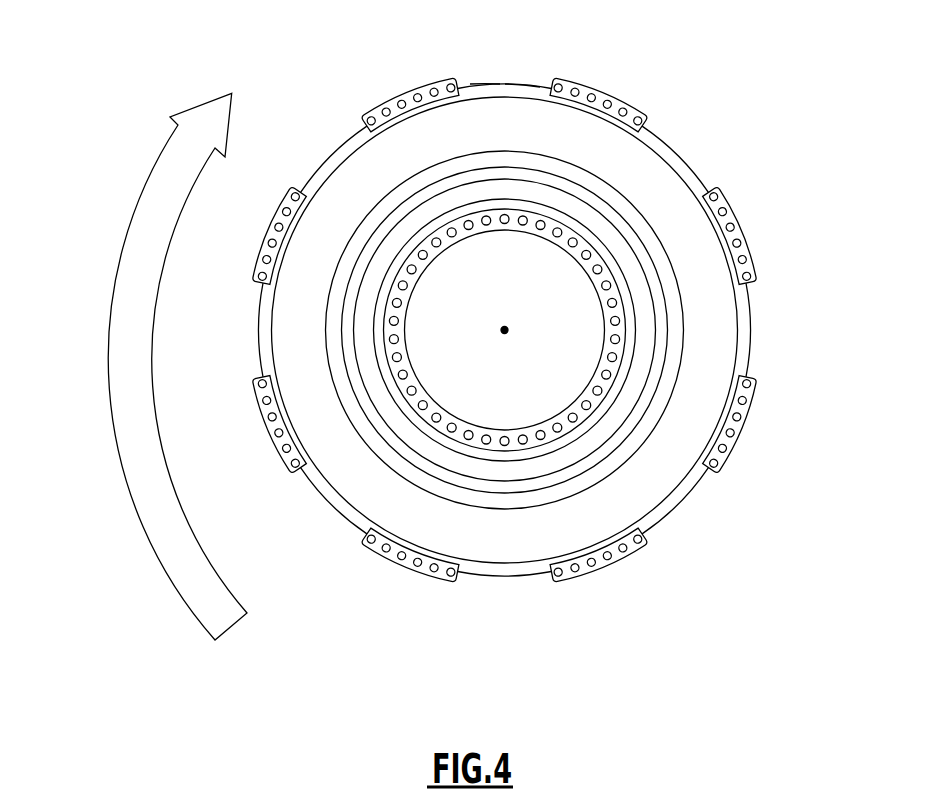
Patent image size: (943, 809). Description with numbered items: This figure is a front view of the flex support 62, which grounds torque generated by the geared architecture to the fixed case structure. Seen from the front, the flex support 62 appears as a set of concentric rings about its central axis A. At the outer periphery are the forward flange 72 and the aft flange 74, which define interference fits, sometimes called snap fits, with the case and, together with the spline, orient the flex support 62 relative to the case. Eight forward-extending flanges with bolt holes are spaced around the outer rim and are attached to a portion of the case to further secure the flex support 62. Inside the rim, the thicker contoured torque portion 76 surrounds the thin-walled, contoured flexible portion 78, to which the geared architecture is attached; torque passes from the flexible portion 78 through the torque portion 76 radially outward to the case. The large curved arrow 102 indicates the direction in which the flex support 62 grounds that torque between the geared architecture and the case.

The flex support 62 is at (720, 98).
The forward flange 72 is at (492, 83).
The aft flange 74 is at (522, 90).
The torque portion 76 is at (303, 321).
The flexible portion 78 is at (370, 386).
The arrow 102 is at (117, 470).
The axis of rotation A is at (506, 333).